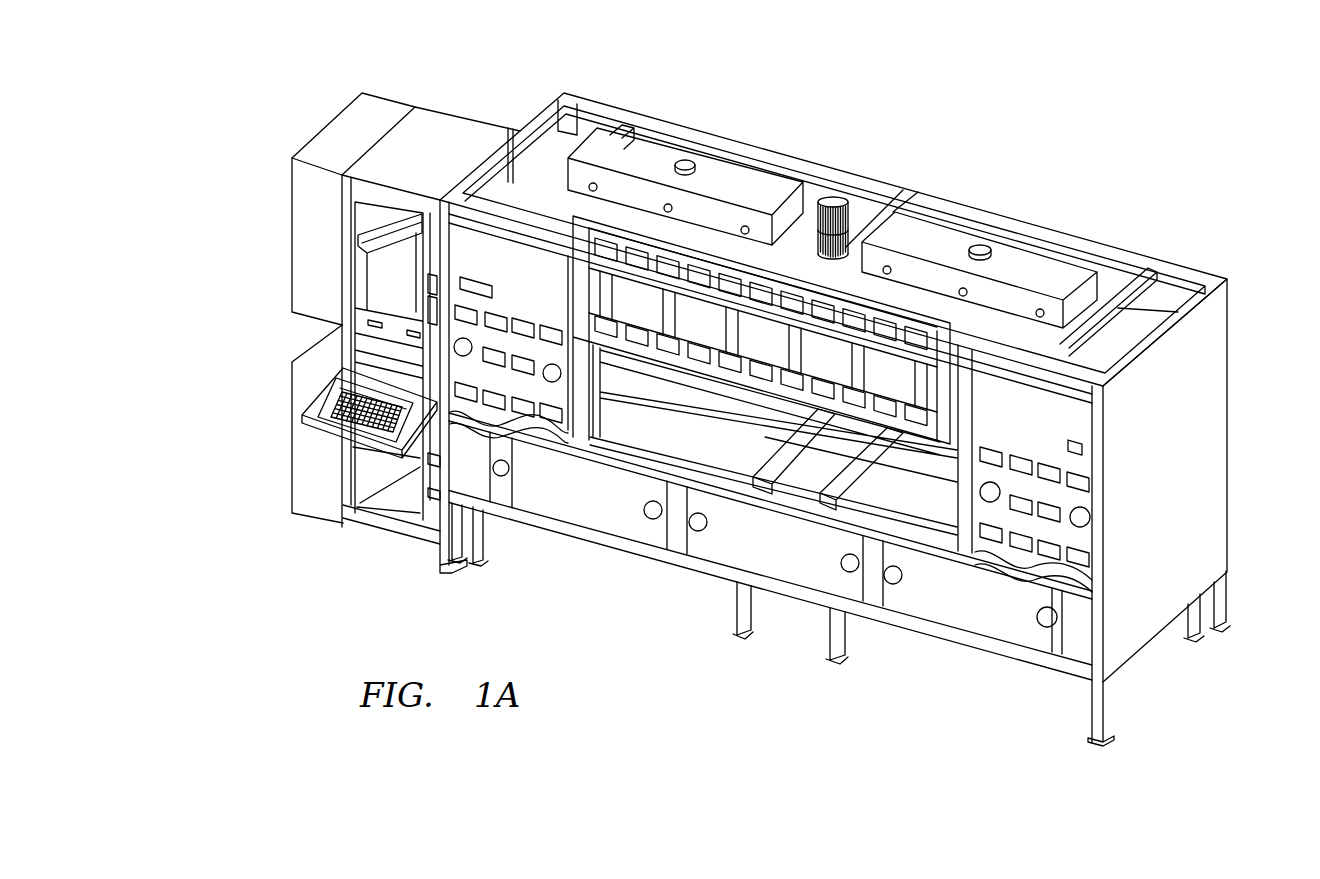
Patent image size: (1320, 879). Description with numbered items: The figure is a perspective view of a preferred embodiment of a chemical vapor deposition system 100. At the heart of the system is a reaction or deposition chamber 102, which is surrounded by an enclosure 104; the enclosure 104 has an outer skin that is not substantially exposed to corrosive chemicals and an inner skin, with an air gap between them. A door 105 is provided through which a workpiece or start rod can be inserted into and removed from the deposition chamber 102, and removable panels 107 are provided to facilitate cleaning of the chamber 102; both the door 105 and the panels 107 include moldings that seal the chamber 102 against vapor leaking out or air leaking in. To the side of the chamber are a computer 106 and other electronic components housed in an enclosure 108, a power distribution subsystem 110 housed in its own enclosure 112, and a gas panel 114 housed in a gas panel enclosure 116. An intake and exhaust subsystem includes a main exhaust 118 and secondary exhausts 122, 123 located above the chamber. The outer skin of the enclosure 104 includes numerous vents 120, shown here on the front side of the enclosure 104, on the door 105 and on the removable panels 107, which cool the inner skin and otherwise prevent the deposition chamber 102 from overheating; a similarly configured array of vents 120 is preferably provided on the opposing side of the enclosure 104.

The chemical vapor deposition system 100 is at (1074, 138).
The deposition chamber 102 is at (1162, 298).
The enclosure 104 is at (1228, 350).
The door 105 is at (701, 311).
The computer 106 is at (449, 137).
The removable panels 107 is at (378, 343).
The enclosure 108 is at (428, 107).
The power distribution subsystem 110 is at (317, 451).
The enclosure 112 is at (292, 387).
The gas panel 114 is at (308, 237).
The gas panel enclosure 116 is at (290, 200).
The main exhaust 118 is at (849, 203).
The vents 120 is at (500, 435).
The secondary exhaust 122 is at (661, 152).
The secondary exhaust 123 is at (943, 235).